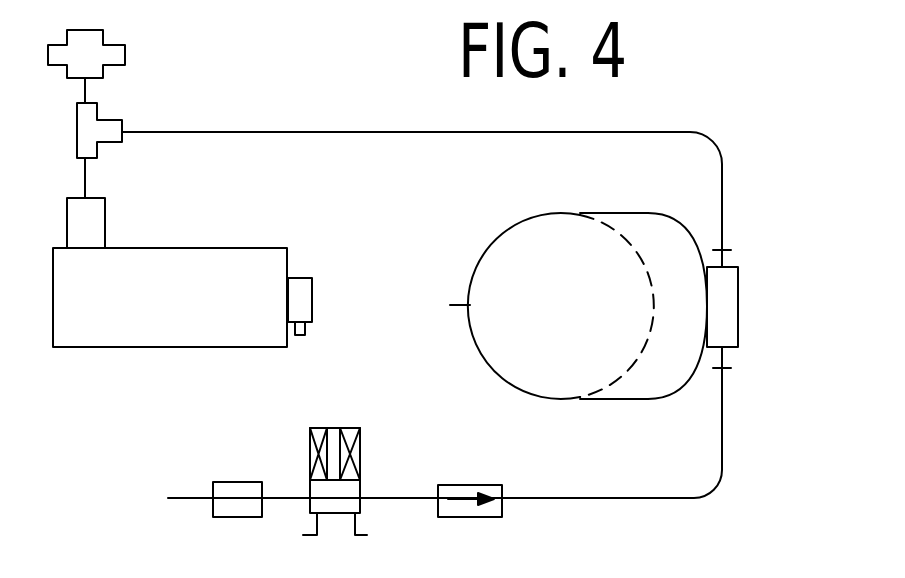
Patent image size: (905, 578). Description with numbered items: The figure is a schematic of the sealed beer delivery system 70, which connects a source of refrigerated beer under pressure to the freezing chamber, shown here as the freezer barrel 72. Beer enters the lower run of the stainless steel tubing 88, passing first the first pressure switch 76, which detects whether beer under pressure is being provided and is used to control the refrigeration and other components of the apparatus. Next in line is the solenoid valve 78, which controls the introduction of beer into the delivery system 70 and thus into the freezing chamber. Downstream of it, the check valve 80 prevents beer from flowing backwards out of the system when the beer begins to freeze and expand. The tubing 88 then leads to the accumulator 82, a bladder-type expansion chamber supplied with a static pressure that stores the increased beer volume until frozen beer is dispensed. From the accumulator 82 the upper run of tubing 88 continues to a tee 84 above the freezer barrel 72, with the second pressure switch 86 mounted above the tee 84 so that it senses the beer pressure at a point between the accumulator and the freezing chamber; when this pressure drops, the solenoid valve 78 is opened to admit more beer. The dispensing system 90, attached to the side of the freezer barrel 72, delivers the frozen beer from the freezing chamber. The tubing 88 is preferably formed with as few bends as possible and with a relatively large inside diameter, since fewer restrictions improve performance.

The sealed beer delivery system 70 is at (730, 125).
The freezer barrel 72 is at (235, 248).
The first pressure switch 76 is at (232, 518).
The solenoid valve 78 is at (360, 447).
The check valve 80 is at (475, 485).
The accumulator 82 is at (627, 400).
The tee 84 is at (108, 127).
The second pressure switch 86 is at (95, 42).
The stainless steel tubing 88 is at (722, 197).
The dispensing system 90 is at (312, 300).